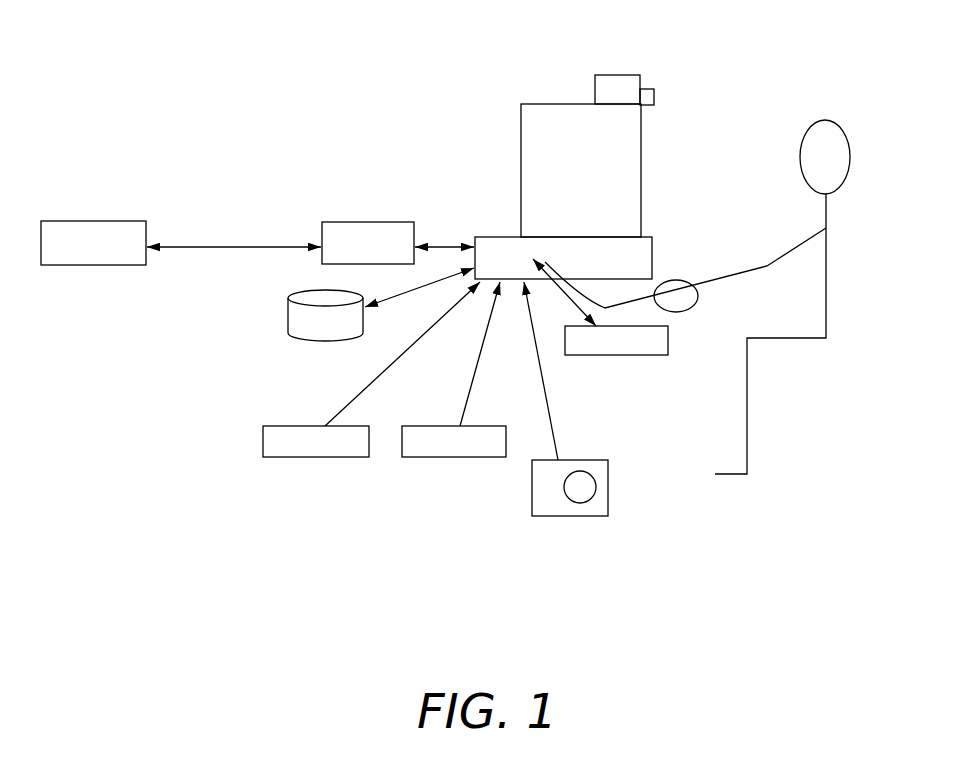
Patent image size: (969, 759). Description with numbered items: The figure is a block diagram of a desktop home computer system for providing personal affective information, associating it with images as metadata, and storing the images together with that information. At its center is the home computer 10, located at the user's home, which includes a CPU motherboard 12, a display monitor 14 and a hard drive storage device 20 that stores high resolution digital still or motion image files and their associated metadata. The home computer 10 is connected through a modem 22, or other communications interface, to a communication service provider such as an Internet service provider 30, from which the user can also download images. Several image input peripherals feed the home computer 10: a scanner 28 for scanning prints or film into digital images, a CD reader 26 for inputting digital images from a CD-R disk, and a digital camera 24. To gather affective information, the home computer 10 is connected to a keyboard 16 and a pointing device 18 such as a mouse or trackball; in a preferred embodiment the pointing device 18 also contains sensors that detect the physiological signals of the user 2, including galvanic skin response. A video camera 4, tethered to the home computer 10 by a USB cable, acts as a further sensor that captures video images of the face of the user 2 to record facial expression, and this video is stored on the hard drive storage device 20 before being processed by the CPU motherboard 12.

The home computer 10 is at (328, 137).
The user 2 is at (826, 256).
The video camera 4 is at (608, 80).
The CPU motherboard 12 is at (498, 238).
The display monitor 14 is at (641, 154).
The keyboard 16 is at (623, 345).
The pointing device 18 is at (674, 287).
The hard drive storage device 20 is at (295, 315).
The modem 22 is at (358, 223).
The digital camera 24 is at (603, 500).
The CD reader 26 is at (470, 450).
The scanner 28 is at (330, 455).
The Internet service provider 30 is at (97, 223).